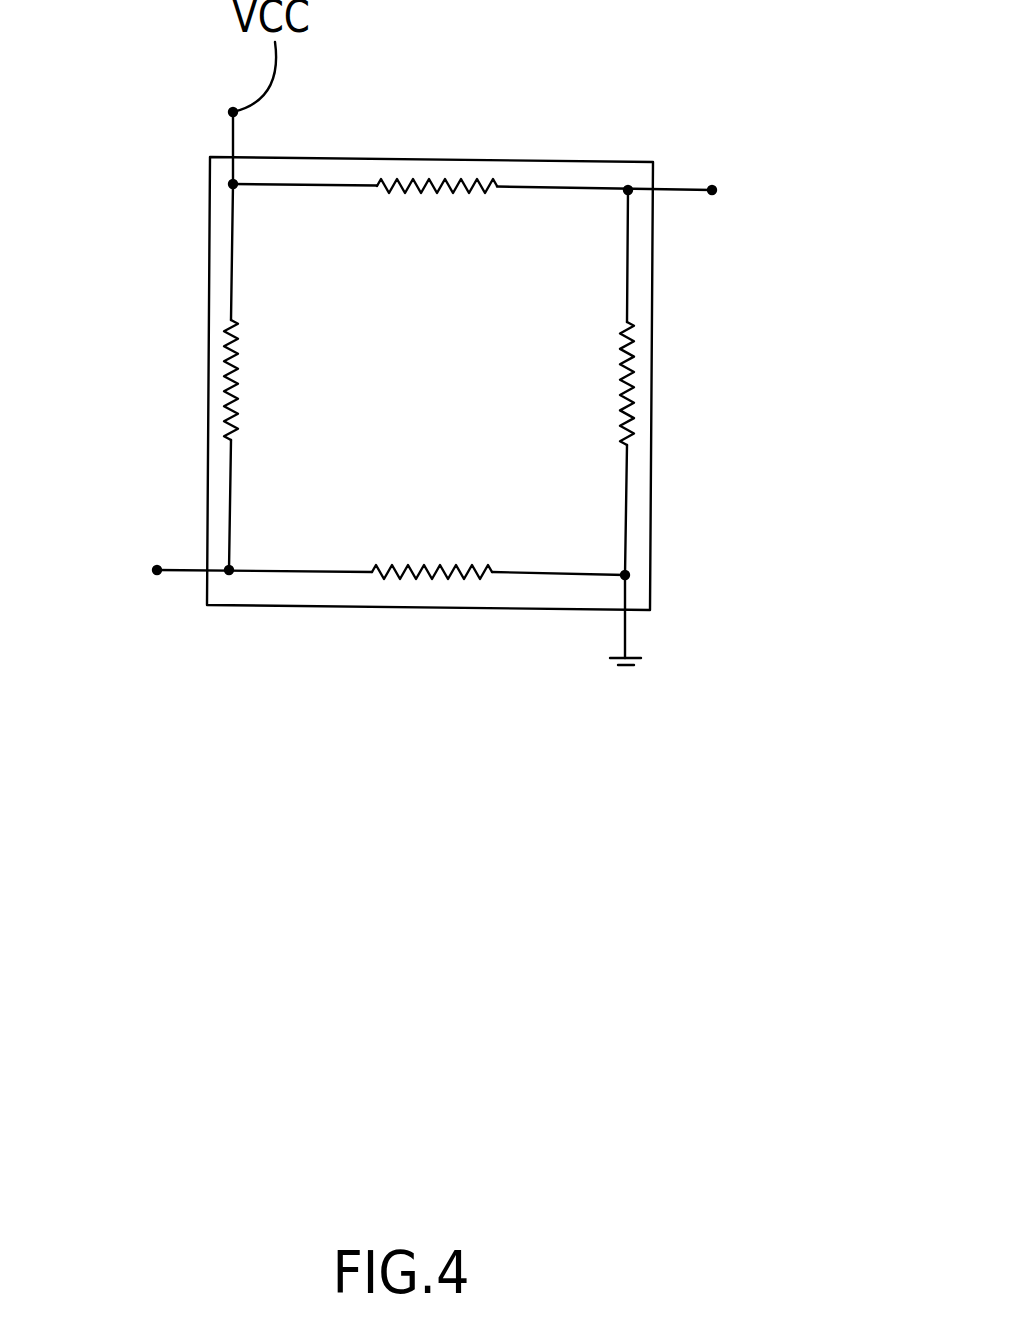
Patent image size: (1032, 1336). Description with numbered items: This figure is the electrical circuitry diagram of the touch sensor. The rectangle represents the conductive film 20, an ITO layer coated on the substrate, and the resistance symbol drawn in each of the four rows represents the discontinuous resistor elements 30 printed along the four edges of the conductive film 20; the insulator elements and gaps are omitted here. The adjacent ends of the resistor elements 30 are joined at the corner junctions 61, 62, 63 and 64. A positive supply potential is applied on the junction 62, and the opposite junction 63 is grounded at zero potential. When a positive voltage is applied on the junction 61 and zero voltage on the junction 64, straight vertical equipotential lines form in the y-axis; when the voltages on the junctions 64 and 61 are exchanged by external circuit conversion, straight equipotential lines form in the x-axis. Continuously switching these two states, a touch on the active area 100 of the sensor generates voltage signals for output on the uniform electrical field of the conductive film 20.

The conductive film 20 is at (547, 513).
The resistor elements 30 is at (433, 185).
The junction 61 is at (628, 190).
The junction 62 is at (233, 184).
The junction 63 is at (625, 575).
The junction 64 is at (229, 570).
The active area 100 is at (395, 445).